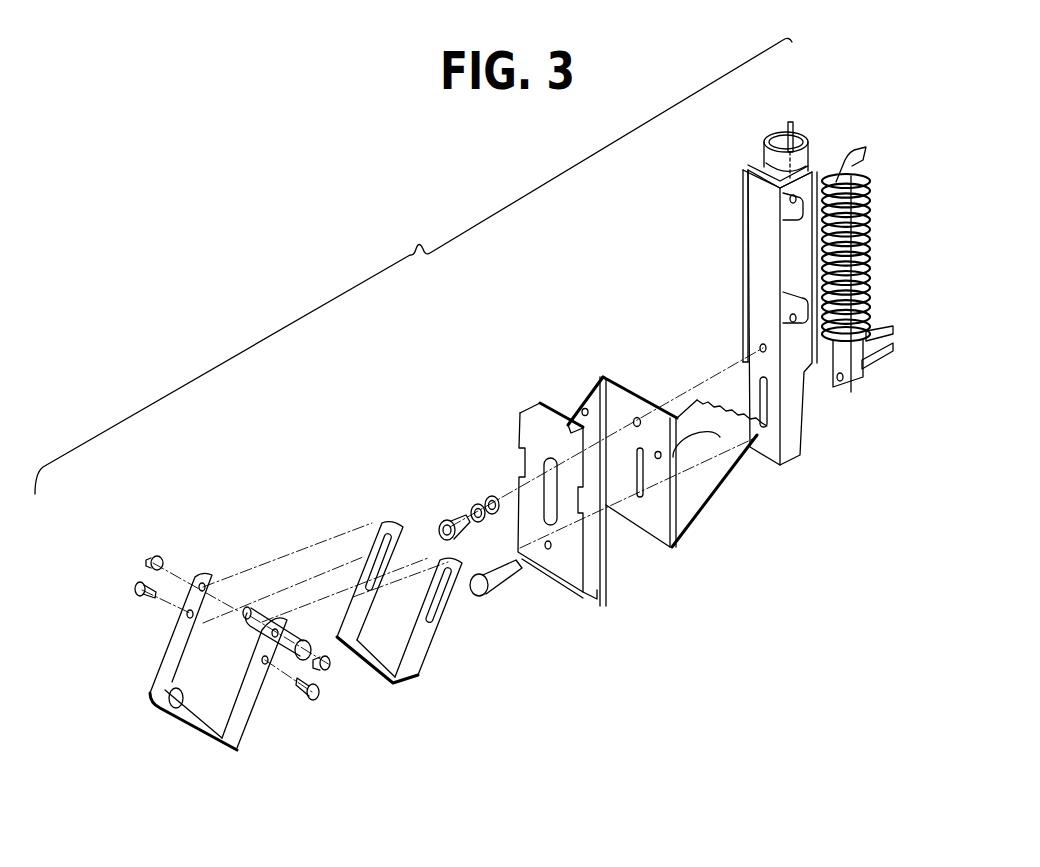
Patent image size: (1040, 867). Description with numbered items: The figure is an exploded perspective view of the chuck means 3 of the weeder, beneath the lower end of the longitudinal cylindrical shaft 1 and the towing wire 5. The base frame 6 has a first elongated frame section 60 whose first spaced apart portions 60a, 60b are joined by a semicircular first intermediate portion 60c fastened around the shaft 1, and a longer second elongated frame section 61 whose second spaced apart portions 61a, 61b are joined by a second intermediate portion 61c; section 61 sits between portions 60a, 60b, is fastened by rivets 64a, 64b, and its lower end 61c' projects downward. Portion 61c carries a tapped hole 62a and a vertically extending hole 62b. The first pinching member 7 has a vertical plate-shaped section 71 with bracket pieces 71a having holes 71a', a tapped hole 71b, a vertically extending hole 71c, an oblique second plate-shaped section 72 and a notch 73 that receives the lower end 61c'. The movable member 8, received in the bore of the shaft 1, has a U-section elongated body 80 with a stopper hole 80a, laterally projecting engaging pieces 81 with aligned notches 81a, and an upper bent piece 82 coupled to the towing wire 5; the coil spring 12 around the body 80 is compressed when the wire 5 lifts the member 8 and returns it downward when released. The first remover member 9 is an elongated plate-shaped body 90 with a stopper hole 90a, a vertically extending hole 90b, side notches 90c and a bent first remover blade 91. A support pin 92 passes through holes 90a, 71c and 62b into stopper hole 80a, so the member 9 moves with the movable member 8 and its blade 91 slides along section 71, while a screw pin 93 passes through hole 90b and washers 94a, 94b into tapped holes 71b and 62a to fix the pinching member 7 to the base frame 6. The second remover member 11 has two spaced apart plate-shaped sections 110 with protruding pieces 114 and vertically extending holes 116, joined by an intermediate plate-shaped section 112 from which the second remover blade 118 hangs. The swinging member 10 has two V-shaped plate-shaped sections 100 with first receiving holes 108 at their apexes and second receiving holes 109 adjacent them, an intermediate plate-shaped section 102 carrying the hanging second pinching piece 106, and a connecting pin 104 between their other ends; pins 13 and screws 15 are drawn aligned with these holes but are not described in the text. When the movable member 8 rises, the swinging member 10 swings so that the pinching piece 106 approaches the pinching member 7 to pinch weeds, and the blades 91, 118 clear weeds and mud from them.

The longitudinal cylindrical shaft 1 is at (773, 128).
The chuck means 3 is at (419, 237).
The towing wire 5 is at (792, 121).
The base frame 6 is at (749, 269).
The first pinching member 7 is at (667, 456).
The movable member 8 is at (905, 285).
The first remover member 9 is at (549, 524).
The swinging member 10 is at (228, 660).
The second remover member 11 is at (422, 602).
The coil spring 12 is at (871, 230).
The pin 13 is at (152, 556).
The screw 15 is at (135, 589).
The first elongated frame section 60 is at (812, 198).
The first spaced apart portion 60a is at (796, 352).
The first spaced apart portion 60b is at (742, 194).
The first intermediate portion 60c is at (818, 170).
The second elongated frame section 61 is at (768, 273).
The second spaced apart portion 61a is at (770, 160).
The second spaced apart portion 61b is at (760, 178).
The second intermediate portion 61c is at (720, 250).
The lower end of second intermediate portion 61c' is at (817, 460).
The tapped hole 62a is at (759, 347).
The vertically extending hole 62b is at (760, 398).
The rivet 64a is at (790, 204).
The rivet 64b is at (790, 318).
The first vertically extending plate-shaped section 71 is at (605, 375).
The bracket piece 71a is at (671, 414).
The hole 71a' is at (667, 418).
The tapped hole 71b is at (637, 415).
The vertically extending hole 71c is at (692, 500).
The second plate-shaped section 72 is at (646, 485).
The notch 73 is at (674, 460).
The elongated body 80 is at (860, 378).
The stopper hole 80a is at (841, 381).
The engaging piece 81 is at (870, 332).
The notch 81a is at (893, 347).
The bent piece 82 is at (860, 152).
The elongated-plate-shaped body 90 is at (528, 440).
The stopper hole 90a is at (549, 552).
The vertically extending hole 90b is at (517, 463).
The notch 90c is at (518, 445).
The first remover blade 91 is at (592, 602).
The support pin 92 is at (486, 575).
The screw pin 93 is at (442, 524).
The washer 94a is at (490, 496).
The washer 94b is at (475, 505).
The spaced apart plate-shaped section 100 is at (165, 676).
The intermediate plate-shaped section 102 is at (155, 703).
The connecting pin 104 is at (328, 670).
The second pinching piece 106 is at (210, 752).
The first receiving hole 108 is at (204, 582).
The second receiving hole 109 is at (188, 615).
The spaced apart plate-shaped section 110 is at (363, 612).
The intermediate plate-shaped section 112 is at (367, 652).
The protruding piece 114 is at (380, 522).
The vertically extending hole 116 is at (372, 548).
The second remover blade 118 is at (394, 686).